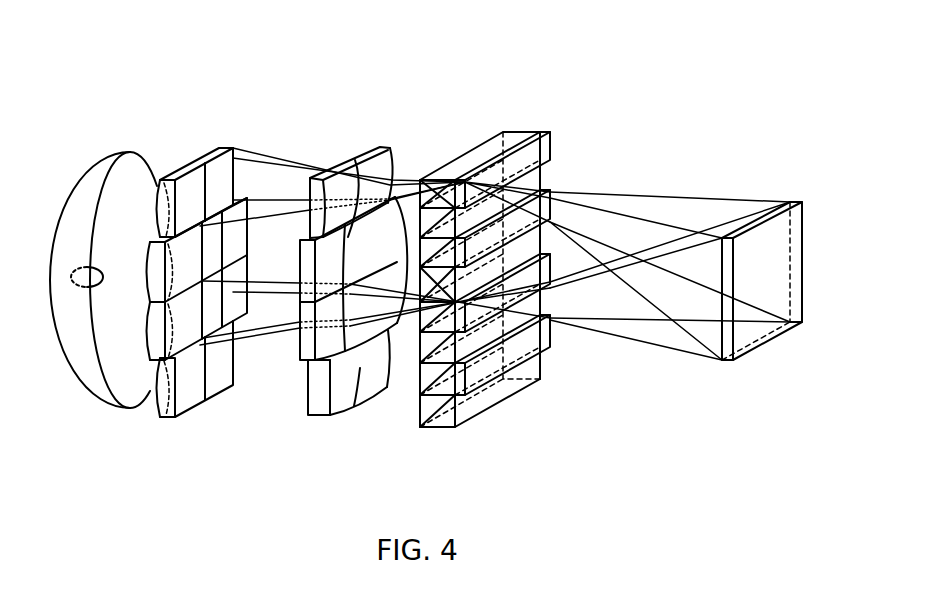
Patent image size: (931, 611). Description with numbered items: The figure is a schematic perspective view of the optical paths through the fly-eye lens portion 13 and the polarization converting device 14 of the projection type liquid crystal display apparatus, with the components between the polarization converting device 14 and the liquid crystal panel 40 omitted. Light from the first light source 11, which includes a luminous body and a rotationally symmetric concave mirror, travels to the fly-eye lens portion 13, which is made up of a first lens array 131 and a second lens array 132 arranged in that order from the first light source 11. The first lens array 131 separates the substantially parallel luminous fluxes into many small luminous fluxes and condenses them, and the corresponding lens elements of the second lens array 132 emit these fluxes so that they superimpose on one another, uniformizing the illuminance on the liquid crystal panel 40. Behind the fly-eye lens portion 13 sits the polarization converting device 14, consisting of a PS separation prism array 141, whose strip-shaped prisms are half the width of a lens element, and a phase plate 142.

The first light source 11 is at (91, 131).
The fly-eye lens portion 13 is at (185, 85).
The first lens array 131 is at (215, 147).
The second lens array 132 is at (363, 147).
The polarization converting device 14 is at (453, 85).
The PS separation prism array 141 is at (465, 178).
The phase plate 142 is at (543, 130).
The liquid crystal panel 40 is at (796, 200).